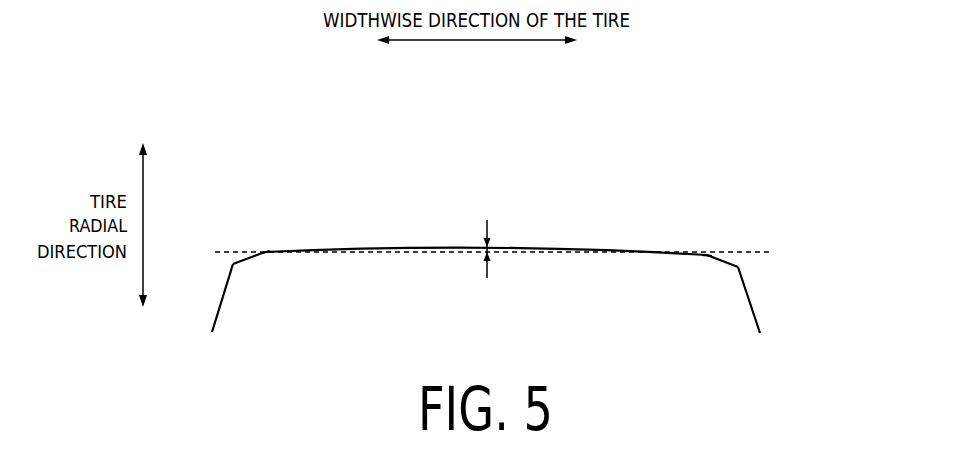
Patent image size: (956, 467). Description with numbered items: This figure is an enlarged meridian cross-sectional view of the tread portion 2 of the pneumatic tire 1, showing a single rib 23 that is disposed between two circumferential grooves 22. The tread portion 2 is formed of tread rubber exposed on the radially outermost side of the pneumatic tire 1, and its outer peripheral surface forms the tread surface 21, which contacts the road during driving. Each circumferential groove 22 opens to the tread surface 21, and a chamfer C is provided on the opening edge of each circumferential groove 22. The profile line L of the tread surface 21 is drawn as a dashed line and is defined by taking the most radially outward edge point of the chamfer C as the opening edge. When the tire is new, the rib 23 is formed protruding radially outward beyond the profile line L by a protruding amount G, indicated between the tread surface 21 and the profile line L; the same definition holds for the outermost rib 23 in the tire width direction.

The pneumatic tire 1 is at (634, 109).
The tread portion 2 is at (615, 265).
The tread surface 21 is at (413, 244).
The circumferential groove 22 is at (220, 293).
The rib 23 is at (520, 277).
The chamfer C is at (249, 258).
The profile line L is at (233, 250).
The protruding amount G is at (484, 253).